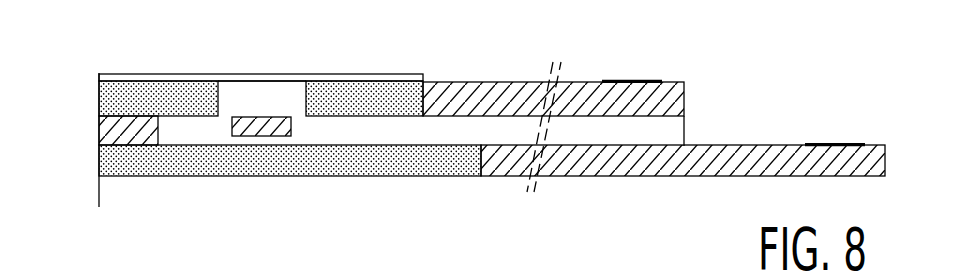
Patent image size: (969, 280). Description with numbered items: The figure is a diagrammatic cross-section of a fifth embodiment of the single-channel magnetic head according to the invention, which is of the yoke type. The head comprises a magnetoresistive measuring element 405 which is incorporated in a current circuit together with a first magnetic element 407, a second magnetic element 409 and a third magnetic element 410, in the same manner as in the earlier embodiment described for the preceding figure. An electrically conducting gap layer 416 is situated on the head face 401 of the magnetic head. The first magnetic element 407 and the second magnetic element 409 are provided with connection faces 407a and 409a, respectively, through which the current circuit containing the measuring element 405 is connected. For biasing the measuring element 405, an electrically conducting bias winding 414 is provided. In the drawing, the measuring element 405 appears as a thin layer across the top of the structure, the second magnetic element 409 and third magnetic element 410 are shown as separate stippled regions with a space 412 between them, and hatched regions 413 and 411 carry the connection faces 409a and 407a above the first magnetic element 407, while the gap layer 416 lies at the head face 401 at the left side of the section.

The head face 401 is at (99, 150).
The magnetoresistive measuring element 405 is at (287, 75).
The first magnetic element 407 is at (341, 165).
The connection face 407a is at (840, 145).
The second magnetic element 409 is at (370, 92).
The connection face 409a is at (625, 80).
The third magnetic element 410 is at (145, 93).
The lower conductor 411 is at (614, 166).
The gap 412 is at (239, 90).
The upper conductor 413 is at (482, 100).
The bias winding 414 is at (258, 128).
The gap layer 416 is at (110, 127).